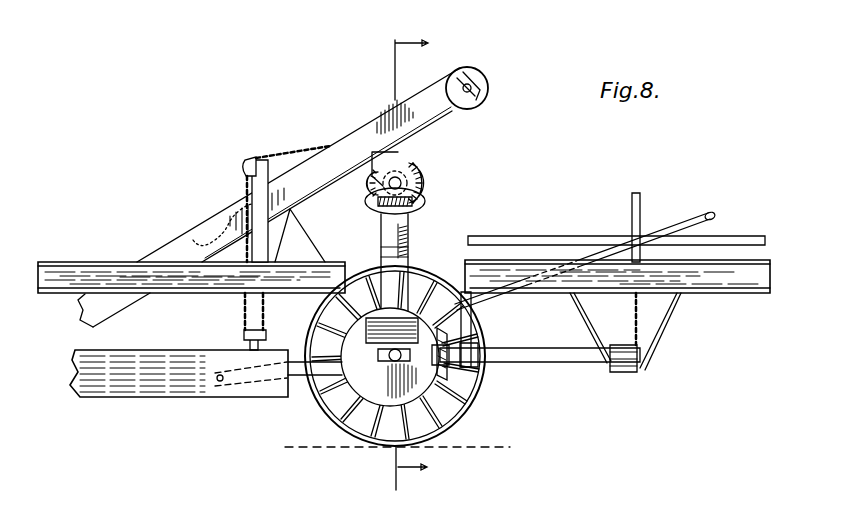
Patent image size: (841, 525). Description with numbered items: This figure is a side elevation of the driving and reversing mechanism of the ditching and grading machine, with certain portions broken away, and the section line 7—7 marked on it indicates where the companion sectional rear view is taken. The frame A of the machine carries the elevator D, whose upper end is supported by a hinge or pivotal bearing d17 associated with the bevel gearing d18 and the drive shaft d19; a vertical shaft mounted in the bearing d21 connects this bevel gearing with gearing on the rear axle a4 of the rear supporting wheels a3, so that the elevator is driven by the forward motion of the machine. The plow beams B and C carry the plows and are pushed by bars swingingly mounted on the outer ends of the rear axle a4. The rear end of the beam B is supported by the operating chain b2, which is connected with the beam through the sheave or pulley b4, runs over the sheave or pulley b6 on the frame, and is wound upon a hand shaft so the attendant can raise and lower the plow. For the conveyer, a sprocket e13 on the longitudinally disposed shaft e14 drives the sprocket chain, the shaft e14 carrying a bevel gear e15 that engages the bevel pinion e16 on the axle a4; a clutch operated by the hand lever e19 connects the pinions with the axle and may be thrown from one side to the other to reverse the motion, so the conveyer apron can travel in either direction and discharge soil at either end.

The main frame beam A is at (98, 272).
The plow beam B is at (185, 383).
The plow beam C is at (297, 387).
The conveyor D is at (357, 128).
The section line 7— 7 is at (397, 258).
The operating chain b2 is at (281, 152).
The sheave or pulley b4 is at (243, 333).
The sheave or pulley b6 is at (240, 166).
The hinge or pivotal bearing d17 is at (423, 202).
The bevel gearing d18 is at (408, 174).
The drive shaft d19 is at (374, 190).
The bearing d21 is at (407, 240).
The rear supporting wheels a3 is at (445, 430).
The rear axle a4 is at (368, 372).
The sprocket e13 is at (638, 371).
The longitudinally disposed shaft e14 is at (585, 363).
The bevel gear e15 is at (467, 398).
The bevel pinion e16 is at (348, 382).
The hand lever e19 is at (673, 220).